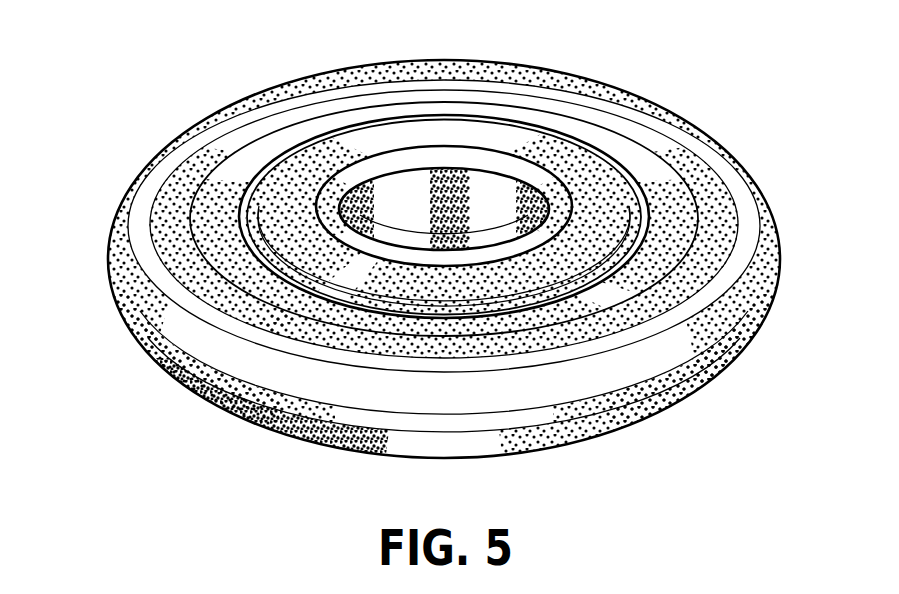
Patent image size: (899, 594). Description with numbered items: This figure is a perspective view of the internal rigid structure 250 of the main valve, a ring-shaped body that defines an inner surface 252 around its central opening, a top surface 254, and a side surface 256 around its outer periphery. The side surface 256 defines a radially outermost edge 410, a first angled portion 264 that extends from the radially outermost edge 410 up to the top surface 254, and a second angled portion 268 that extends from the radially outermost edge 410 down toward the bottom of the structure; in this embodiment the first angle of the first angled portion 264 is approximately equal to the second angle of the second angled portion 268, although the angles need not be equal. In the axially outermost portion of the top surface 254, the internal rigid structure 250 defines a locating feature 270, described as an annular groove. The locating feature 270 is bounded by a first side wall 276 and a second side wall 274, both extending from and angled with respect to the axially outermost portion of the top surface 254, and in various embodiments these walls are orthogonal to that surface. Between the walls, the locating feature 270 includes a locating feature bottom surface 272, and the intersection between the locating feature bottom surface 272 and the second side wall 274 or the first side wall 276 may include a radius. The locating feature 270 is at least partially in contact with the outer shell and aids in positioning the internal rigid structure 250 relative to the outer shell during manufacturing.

The internal rigid structure 250 is at (222, 50).
The inner surface 252 is at (513, 212).
The top surface 254 is at (273, 195).
The side surface 256 is at (187, 335).
The first angled portion 264 is at (133, 277).
The second angled portion 268 is at (382, 440).
The locating feature 270 is at (653, 175).
The locating feature bottom surface 272 is at (667, 225).
The second side wall 274 is at (305, 112).
The first side wall 276 is at (442, 318).
The radially outermost edge 410 is at (223, 382).